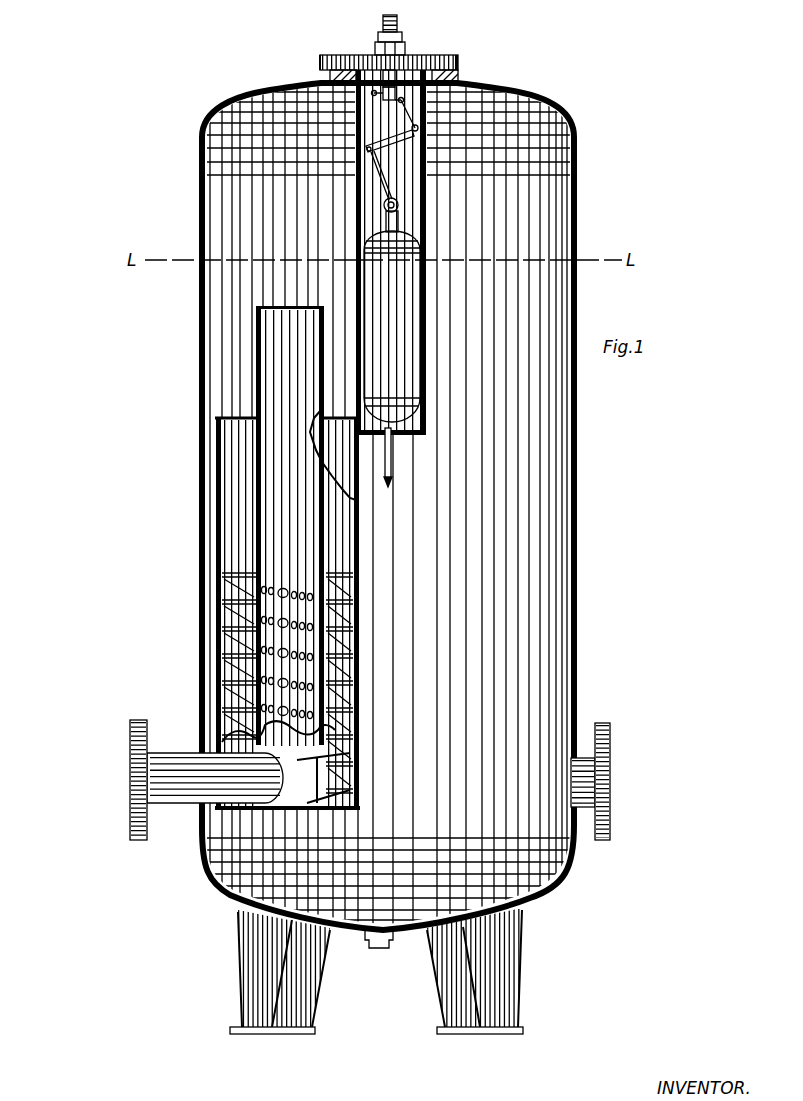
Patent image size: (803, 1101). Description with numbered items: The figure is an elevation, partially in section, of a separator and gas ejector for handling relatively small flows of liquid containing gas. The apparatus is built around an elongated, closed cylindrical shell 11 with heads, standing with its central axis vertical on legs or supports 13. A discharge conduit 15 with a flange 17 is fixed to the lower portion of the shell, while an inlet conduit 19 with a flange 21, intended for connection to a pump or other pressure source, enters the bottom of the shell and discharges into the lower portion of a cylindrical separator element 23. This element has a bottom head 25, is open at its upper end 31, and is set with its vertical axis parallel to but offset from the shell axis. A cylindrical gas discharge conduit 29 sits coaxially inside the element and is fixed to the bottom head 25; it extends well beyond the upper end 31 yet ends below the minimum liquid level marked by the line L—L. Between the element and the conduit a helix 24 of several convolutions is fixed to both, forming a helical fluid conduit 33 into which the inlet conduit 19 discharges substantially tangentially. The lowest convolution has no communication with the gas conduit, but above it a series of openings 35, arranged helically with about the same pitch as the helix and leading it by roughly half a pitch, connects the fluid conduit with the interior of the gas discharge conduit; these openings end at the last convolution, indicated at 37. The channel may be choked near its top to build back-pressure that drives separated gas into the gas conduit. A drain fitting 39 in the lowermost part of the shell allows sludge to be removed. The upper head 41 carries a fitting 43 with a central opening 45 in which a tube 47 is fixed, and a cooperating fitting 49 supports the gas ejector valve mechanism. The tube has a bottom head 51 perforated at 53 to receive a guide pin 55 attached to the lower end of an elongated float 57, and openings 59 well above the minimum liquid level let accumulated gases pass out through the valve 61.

The cylindrical shell 11 is at (579, 560).
The legs or supports 13 is at (525, 953).
The discharge conduit 15 is at (578, 756).
The flange 17 is at (611, 746).
The inlet conduit 19 is at (182, 806).
The flange 21 is at (128, 828).
The cylindrical separator element 23 is at (362, 548).
The helix 24 is at (338, 666).
The bottom head 25 is at (333, 811).
The gas discharge conduit 29 is at (262, 304).
The upper end 31 is at (250, 416).
The helical fluid conduit 33 is at (343, 772).
The openings 35 is at (328, 712).
The last convolution of helix 37 is at (250, 591).
The drain fitting 39 is at (374, 947).
The upper head 41 is at (539, 98).
The fitting 43 is at (449, 79).
The central opening 45 is at (458, 63).
The tube 47 is at (431, 184).
The fitting 49 is at (340, 54).
The bottom head 51 is at (406, 431).
The perforation 53 is at (393, 442).
The guide pin 55 is at (391, 481).
The float 57 is at (399, 352).
The openings 59 is at (409, 206).
The gas ejector valve 61 is at (403, 36).